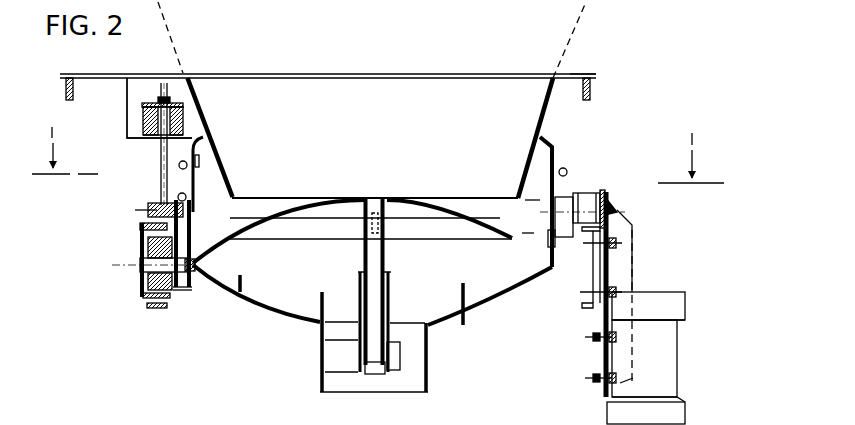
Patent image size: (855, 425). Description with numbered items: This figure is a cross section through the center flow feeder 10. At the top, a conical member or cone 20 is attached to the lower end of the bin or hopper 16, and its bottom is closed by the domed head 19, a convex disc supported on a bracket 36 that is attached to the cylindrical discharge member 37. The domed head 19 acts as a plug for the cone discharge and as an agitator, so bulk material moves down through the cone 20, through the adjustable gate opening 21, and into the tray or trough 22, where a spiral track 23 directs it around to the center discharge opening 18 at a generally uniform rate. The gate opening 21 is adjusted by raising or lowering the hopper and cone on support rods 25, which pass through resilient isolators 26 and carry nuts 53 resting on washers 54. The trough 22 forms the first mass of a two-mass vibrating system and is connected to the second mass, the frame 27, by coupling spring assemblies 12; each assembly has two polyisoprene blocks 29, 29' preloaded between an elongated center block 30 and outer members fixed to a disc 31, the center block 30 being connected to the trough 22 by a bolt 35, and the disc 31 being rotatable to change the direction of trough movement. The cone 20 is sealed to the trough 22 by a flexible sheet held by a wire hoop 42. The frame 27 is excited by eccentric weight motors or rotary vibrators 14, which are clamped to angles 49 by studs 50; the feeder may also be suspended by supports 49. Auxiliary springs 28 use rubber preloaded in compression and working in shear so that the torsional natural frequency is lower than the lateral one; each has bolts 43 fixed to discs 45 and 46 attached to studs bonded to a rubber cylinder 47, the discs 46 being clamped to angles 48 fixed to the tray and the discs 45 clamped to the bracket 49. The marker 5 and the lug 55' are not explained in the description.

The drive assembly 5 is at (72, 266).
The center flow feeder 10 is at (618, 100).
The coupling spring assembly 12 is at (140, 233).
The rotary vibrator 14 is at (655, 297).
The hopper 16 is at (571, 18).
The discharge opening 18 is at (410, 383).
The domed head 19 is at (462, 210).
The conical member 20 is at (577, 71).
The gate opening 21 is at (528, 238).
The tray 22 is at (505, 298).
The spiral track 23 is at (318, 294).
The support rod 25 is at (160, 100).
The resilient isolator 26 is at (143, 120).
The frame 27 is at (153, 308).
The auxiliary spring 28 is at (580, 192).
The polyisoprene block 29 is at (126, 278).
The polyisoprene block 29' is at (126, 260).
The center block 30 is at (176, 287).
The disc 31 is at (142, 298).
The bolt 35 is at (140, 259).
The bracket 36 is at (363, 356).
The discharge member 37 is at (322, 343).
The wire hoop 42 is at (180, 192).
The bolt 43 is at (613, 208).
The disc 45 is at (608, 196).
The disc 46 is at (565, 233).
The rubber cylinder 47 is at (594, 192).
The angle 48 is at (582, 292).
The bracket 49 is at (623, 253).
The stud 50 is at (593, 376).
The nut 53 is at (170, 100).
The washer 54 is at (183, 105).
The support post 55' is at (97, 69).